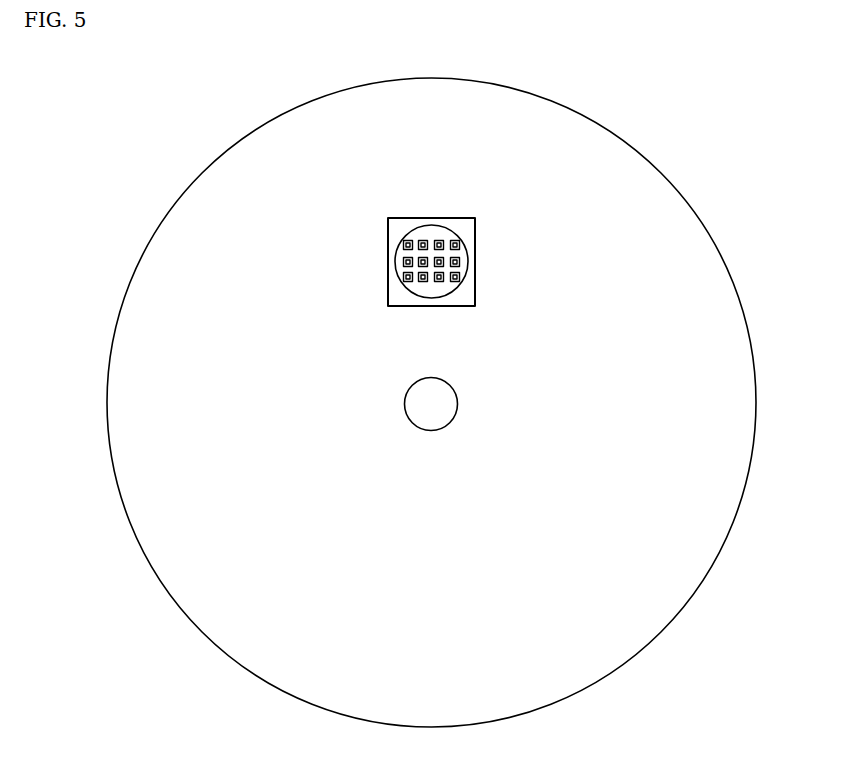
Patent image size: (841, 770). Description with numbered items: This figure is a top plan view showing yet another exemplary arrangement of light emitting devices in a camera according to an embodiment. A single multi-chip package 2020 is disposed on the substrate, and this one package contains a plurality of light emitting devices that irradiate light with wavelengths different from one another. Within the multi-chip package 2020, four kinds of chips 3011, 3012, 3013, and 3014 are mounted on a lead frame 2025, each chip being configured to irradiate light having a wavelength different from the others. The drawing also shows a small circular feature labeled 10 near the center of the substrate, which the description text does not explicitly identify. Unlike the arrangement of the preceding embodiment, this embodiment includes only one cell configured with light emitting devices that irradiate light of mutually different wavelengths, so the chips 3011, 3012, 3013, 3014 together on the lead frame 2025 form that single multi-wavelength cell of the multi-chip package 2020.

The center hole of wafer 10 is at (437, 405).
The multi-chip package 2020 is at (478, 290).
The lead frame 2025 is at (468, 257).
The chip 3011 is at (386, 247).
The chip 3012 is at (423, 238).
The chip 3013 is at (442, 243).
The chip 3014 is at (463, 242).